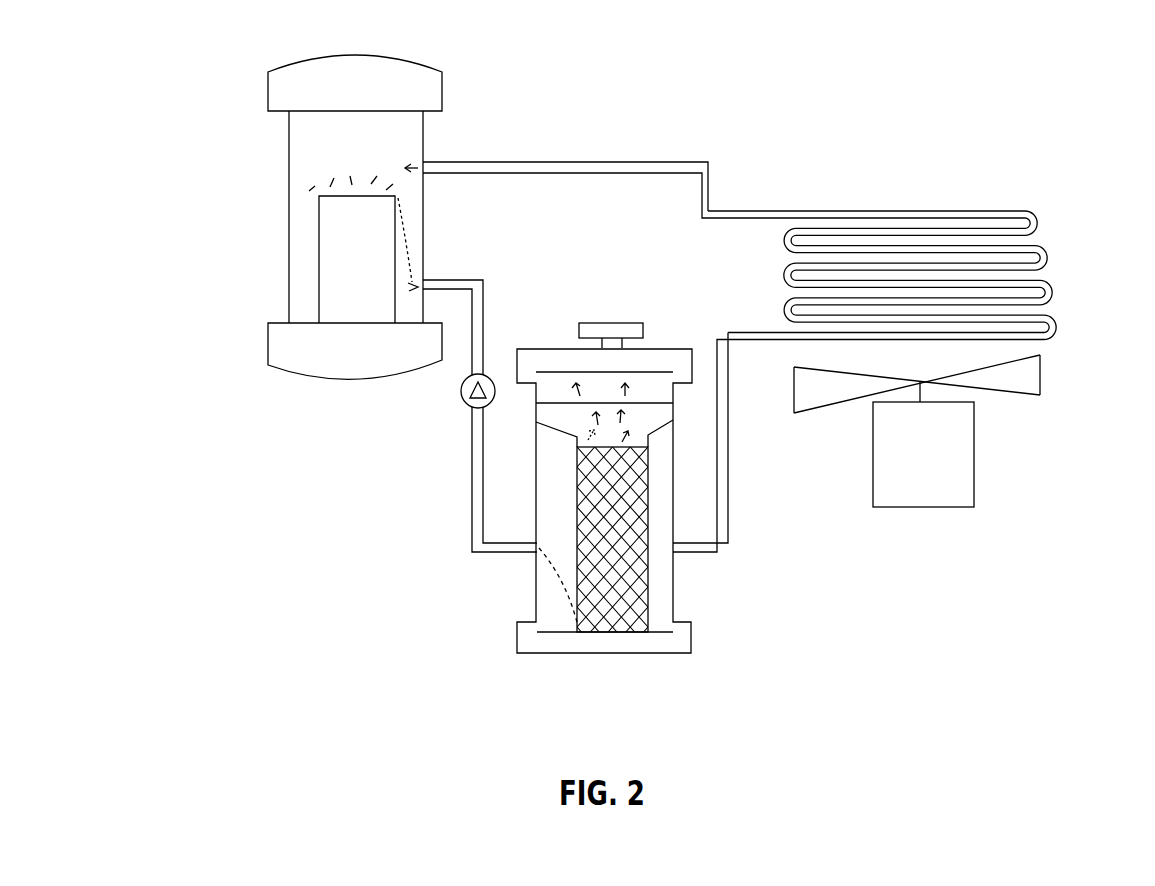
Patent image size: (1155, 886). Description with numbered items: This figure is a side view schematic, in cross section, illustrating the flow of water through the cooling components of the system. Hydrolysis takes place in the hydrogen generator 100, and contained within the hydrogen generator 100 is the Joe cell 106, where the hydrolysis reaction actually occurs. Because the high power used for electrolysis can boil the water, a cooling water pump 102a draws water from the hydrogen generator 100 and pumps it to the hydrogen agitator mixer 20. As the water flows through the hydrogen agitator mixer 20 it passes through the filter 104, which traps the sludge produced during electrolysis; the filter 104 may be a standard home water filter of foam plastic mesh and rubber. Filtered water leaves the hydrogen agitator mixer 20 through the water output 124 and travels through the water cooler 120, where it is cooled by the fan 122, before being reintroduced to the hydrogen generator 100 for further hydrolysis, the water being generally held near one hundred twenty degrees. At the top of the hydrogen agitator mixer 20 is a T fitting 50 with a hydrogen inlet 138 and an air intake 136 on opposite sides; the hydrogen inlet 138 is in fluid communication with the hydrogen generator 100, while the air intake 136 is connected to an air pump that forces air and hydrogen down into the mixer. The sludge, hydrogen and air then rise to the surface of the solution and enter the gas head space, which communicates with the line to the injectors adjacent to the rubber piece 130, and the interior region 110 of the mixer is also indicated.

The hydrogen agitator mixer 20 is at (470, 630).
The T fitting 50 is at (605, 327).
The hydrogen generator 100 is at (249, 196).
The cooling water pump 102a is at (470, 393).
The filter 104 is at (648, 572).
The Joe cell 106 is at (313, 280).
The filter housing interior 110 is at (673, 412).
The water cooler 120 is at (985, 213).
The fan 122 is at (978, 462).
The water output 124 is at (730, 429).
The rubber piece 130 is at (552, 370).
The air intake 136 is at (638, 338).
The hydrogen inlet 138 is at (586, 327).